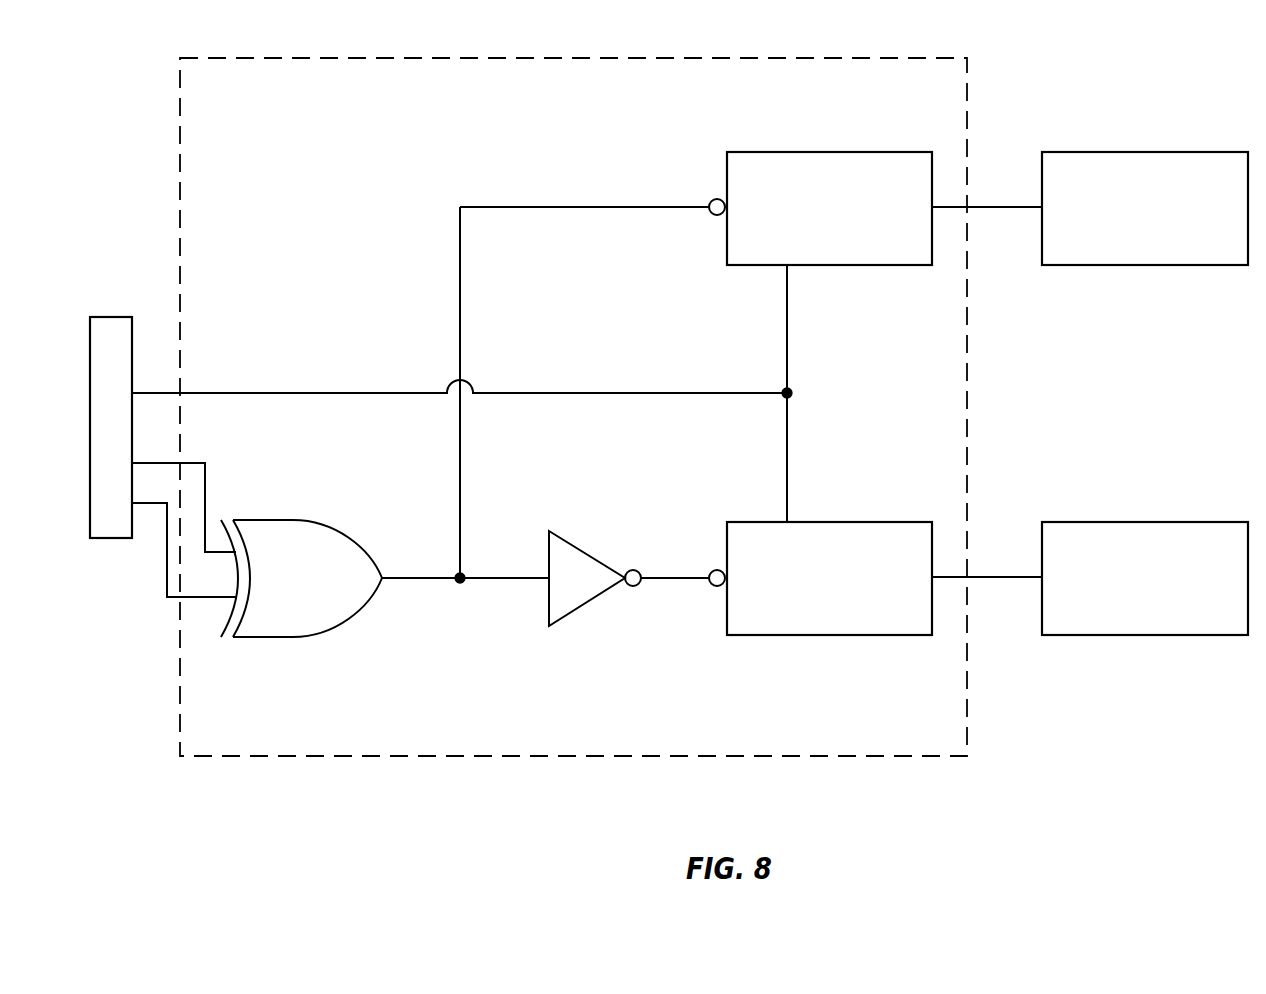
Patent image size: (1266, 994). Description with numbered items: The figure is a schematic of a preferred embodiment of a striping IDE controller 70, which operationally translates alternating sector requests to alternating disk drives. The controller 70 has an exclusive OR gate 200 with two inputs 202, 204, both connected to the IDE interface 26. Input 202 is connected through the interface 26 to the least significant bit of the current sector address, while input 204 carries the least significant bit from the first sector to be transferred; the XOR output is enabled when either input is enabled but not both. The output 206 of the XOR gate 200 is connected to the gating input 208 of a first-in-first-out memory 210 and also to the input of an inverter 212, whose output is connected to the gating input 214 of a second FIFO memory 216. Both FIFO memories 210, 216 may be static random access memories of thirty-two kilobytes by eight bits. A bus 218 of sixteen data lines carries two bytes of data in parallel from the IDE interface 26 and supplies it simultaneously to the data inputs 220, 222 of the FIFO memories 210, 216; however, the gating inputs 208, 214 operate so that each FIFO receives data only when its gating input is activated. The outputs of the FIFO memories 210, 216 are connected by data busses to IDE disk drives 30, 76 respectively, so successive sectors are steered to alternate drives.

The IDE interface 26 is at (112, 316).
The striping IDE controller 70 is at (732, 57).
The IDE disk drive 30 is at (1205, 150).
The IDE disk drive 76 is at (1200, 520).
The exclusive OR gate 200 is at (327, 630).
The input 202 is at (207, 466).
The input 204 is at (166, 580).
The output 206 is at (415, 582).
The gating input 208 is at (714, 216).
The first-in-first-out memory 210 is at (878, 150).
The inverter 212 is at (580, 608).
The gating input 214 is at (716, 588).
The FIFO memory 216 is at (877, 637).
The bus 218 is at (575, 392).
The data input 220 is at (788, 267).
The data input 222 is at (789, 520).